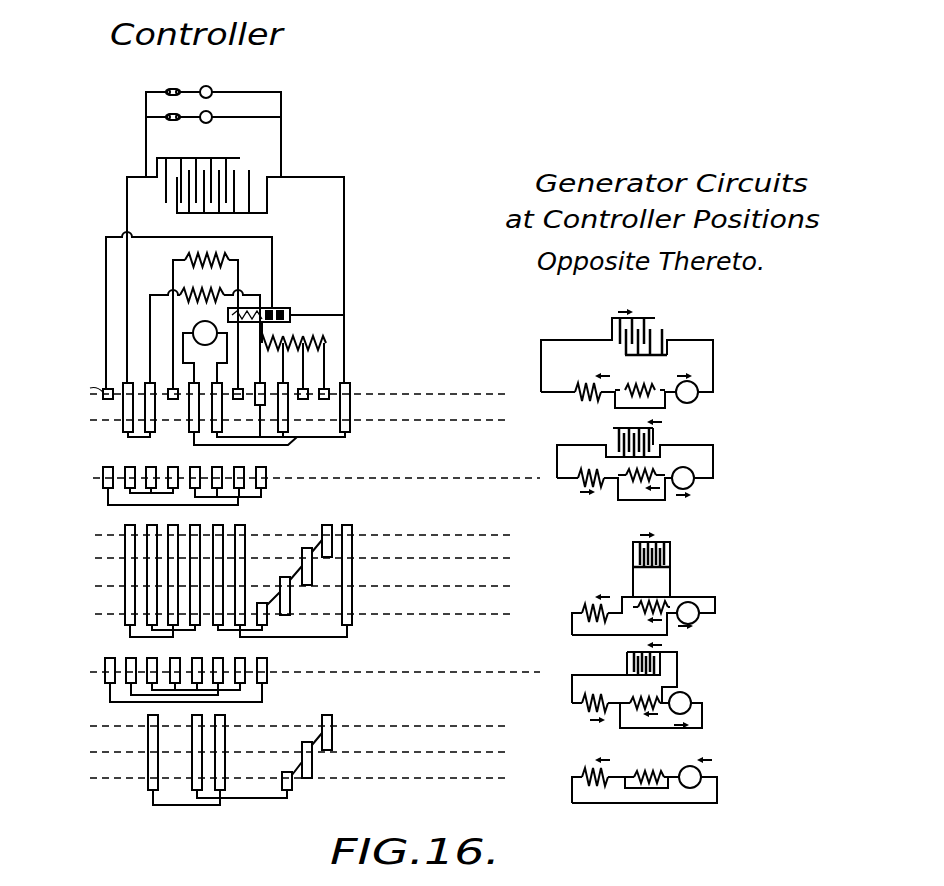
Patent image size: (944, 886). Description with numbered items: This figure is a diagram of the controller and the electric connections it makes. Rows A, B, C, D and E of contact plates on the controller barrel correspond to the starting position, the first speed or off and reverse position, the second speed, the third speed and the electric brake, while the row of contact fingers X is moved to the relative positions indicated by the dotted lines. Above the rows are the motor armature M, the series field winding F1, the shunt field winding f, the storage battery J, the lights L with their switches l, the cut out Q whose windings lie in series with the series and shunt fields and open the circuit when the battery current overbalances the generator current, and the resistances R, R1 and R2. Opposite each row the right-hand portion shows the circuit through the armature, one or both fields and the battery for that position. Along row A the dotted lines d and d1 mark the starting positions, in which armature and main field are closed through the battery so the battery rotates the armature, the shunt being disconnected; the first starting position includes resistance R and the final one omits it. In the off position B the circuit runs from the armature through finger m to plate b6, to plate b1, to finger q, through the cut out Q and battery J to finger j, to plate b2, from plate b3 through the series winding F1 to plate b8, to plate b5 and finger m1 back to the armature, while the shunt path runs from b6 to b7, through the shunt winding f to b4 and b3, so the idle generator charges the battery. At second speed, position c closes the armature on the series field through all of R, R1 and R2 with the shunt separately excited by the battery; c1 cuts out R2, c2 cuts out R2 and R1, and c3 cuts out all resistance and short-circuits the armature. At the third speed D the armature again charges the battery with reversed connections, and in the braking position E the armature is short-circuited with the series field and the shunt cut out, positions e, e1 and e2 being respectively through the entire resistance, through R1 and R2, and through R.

The switches l is at (170, 96).
The lights L is at (213, 112).
The storage battery J is at (159, 196).
The shunt field winding f is at (184, 257).
The series field winding F1 is at (228, 291).
The armature M is at (205, 352).
The cut out Q is at (266, 308).
The resistance R is at (281, 343).
The resistance R1 is at (301, 343).
The resistance R2 is at (326, 343).
The row of contact fingers X is at (92, 388).
The contact finger q is at (107, 389).
The contact finger j is at (133, 385).
The contact finger m1 is at (192, 385).
The contact finger m is at (218, 387).
The row of contact plates A is at (278, 403).
The row of contact plates B is at (295, 475).
The row of contact plates C is at (288, 581).
The row of contact plates D is at (293, 677).
The row of contact plates E is at (287, 760).
The contact plate b1 is at (108, 466).
The contact plate b2 is at (130, 466).
The contact plate b3 is at (151, 466).
The contact plate b4 is at (173, 466).
The contact plate b5 is at (196, 467).
The contact plate b6 is at (218, 467).
The contact plate b7 is at (240, 467).
The contact plate b8 is at (262, 467).
The contact line d is at (303, 396).
The contact line d' d1 is at (305, 421).
The second speed position c is at (309, 535).
The second speed position c1 is at (311, 557).
The second speed position c2 is at (312, 584).
The second speed position c3 is at (312, 611).
The electric braking position e is at (307, 726).
The electric braking position e1 is at (308, 752).
The electric braking position e2 is at (310, 777).